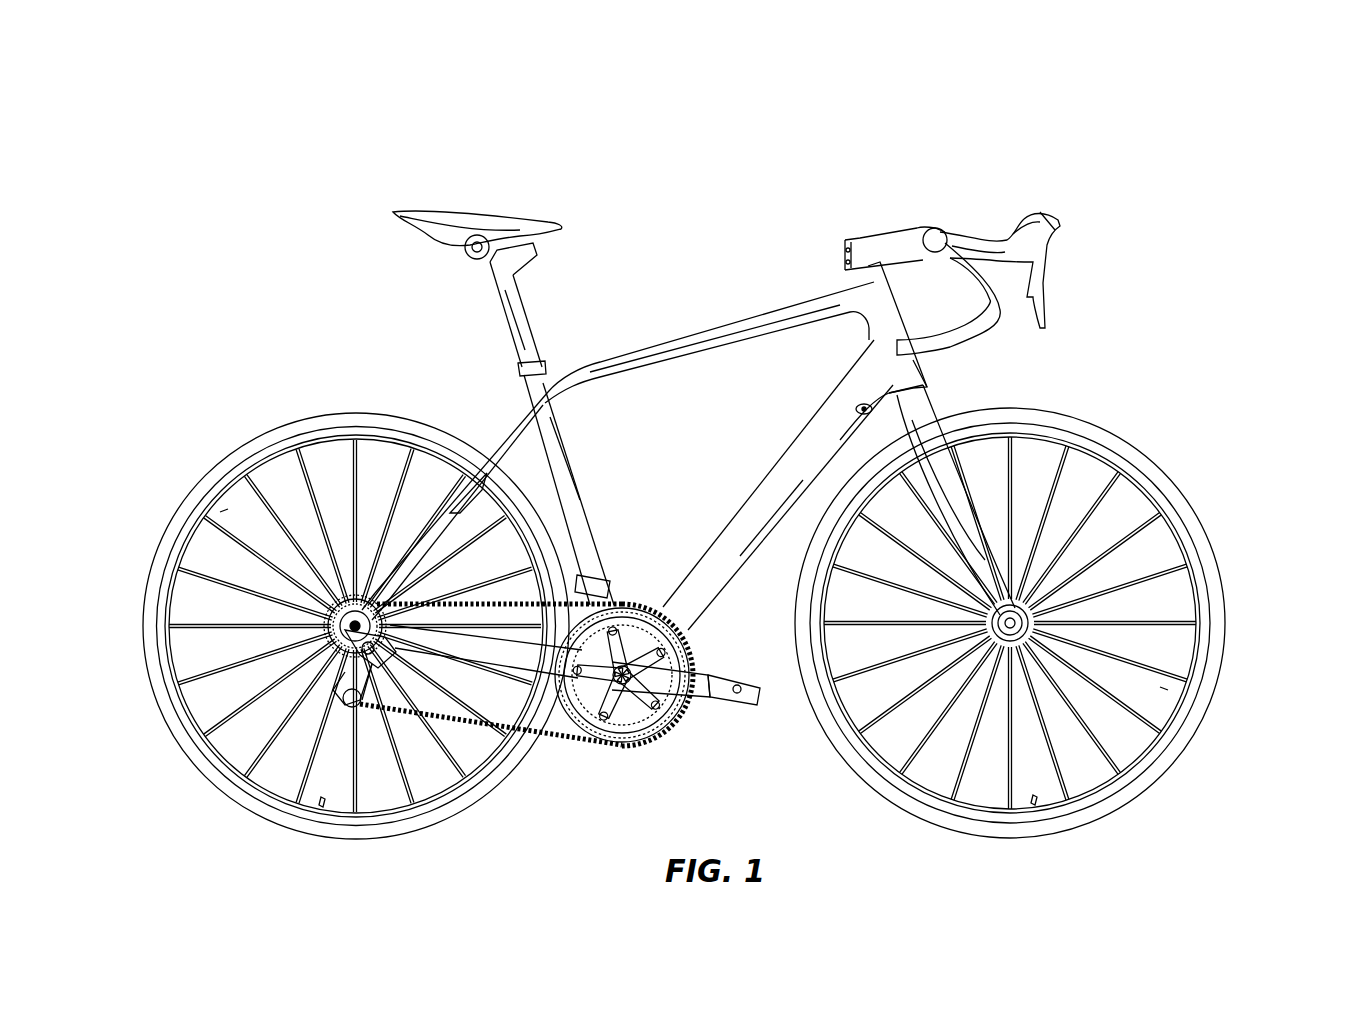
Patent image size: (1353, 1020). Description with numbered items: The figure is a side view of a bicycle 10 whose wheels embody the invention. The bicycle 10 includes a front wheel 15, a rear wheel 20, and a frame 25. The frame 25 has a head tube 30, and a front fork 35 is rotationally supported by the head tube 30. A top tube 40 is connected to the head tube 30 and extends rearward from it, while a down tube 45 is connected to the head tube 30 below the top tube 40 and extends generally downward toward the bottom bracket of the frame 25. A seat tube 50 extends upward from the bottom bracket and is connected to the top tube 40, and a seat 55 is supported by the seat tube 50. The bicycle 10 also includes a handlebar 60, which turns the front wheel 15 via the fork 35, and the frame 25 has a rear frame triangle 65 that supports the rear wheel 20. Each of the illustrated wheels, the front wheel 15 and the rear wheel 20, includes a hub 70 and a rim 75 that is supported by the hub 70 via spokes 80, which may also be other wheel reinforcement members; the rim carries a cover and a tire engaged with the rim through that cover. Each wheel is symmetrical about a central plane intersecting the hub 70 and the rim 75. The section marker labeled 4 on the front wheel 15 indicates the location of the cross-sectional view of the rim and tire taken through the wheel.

The bicycle 10 is at (898, 127).
The front wheel 15 is at (1147, 455).
The rear wheel 20 is at (317, 413).
The frame 25 is at (686, 328).
The head tube 30 is at (890, 318).
The front fork 35 is at (920, 405).
The top tube 40 is at (804, 318).
The down tube 45 is at (786, 470).
The seat tube 50 is at (556, 437).
The seat 55 is at (483, 217).
The handlebar 60 is at (958, 245).
The rear frame triangle 65 is at (497, 440).
The hub 70 is at (1133, 563).
The rim 75 is at (1200, 627).
The spokes 80 is at (1163, 687).
The section line 4- 4 is at (1113, 371).